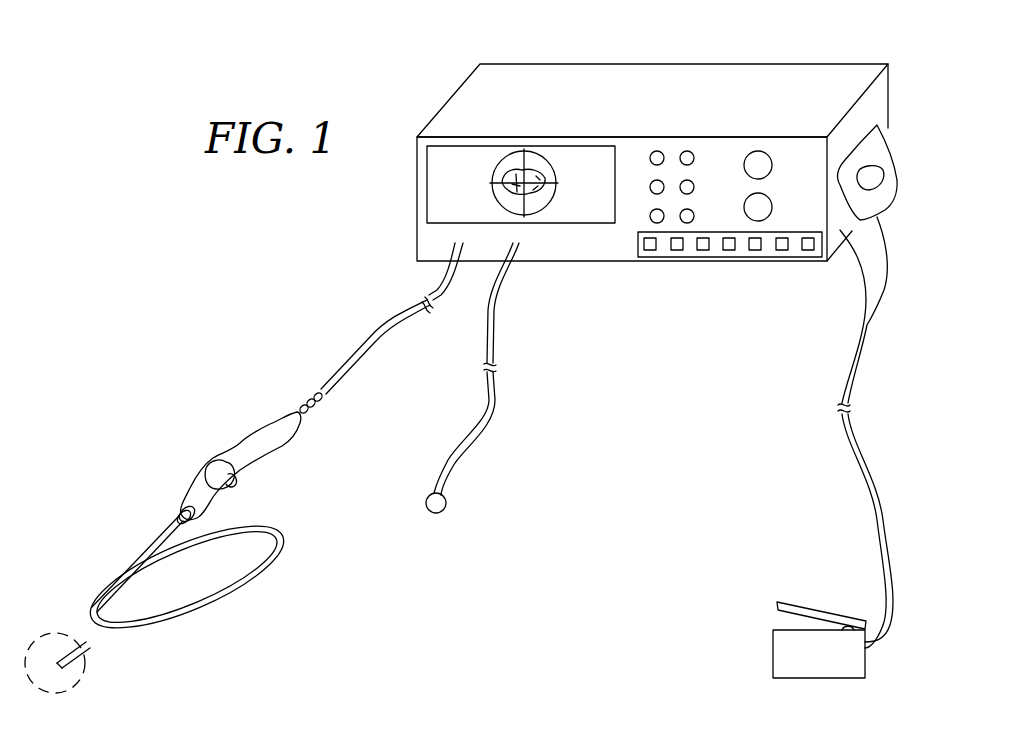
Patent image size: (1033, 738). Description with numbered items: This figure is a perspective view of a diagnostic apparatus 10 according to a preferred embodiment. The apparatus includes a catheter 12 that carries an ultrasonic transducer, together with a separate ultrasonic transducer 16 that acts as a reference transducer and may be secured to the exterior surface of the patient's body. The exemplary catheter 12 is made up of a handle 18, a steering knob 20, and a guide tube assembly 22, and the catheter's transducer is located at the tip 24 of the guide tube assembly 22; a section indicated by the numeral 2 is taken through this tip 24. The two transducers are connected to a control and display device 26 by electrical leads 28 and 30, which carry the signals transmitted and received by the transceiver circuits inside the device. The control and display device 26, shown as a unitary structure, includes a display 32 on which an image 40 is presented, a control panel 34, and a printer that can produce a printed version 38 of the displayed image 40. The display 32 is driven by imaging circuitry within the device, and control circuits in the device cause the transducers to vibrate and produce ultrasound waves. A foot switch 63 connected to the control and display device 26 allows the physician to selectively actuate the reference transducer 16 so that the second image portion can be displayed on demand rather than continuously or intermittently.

The diagnostic apparatus 10 is at (428, 76).
The catheter 12 is at (193, 428).
The ultrasonic transducer 16 is at (442, 509).
The handle 18 is at (260, 477).
The steering knob 20 is at (202, 473).
The guide tube assembly 22 is at (238, 596).
The tip 24 is at (66, 666).
The control and display device 26 is at (678, 67).
The electrical lead 28 is at (382, 327).
The electrical lead 30 is at (497, 403).
The display 32 is at (582, 160).
The control panel 34 is at (726, 149).
The printed version 38 is at (868, 318).
The image 40 is at (546, 160).
The foot switch 63 is at (787, 657).
The section line 2- 2 is at (76, 645).